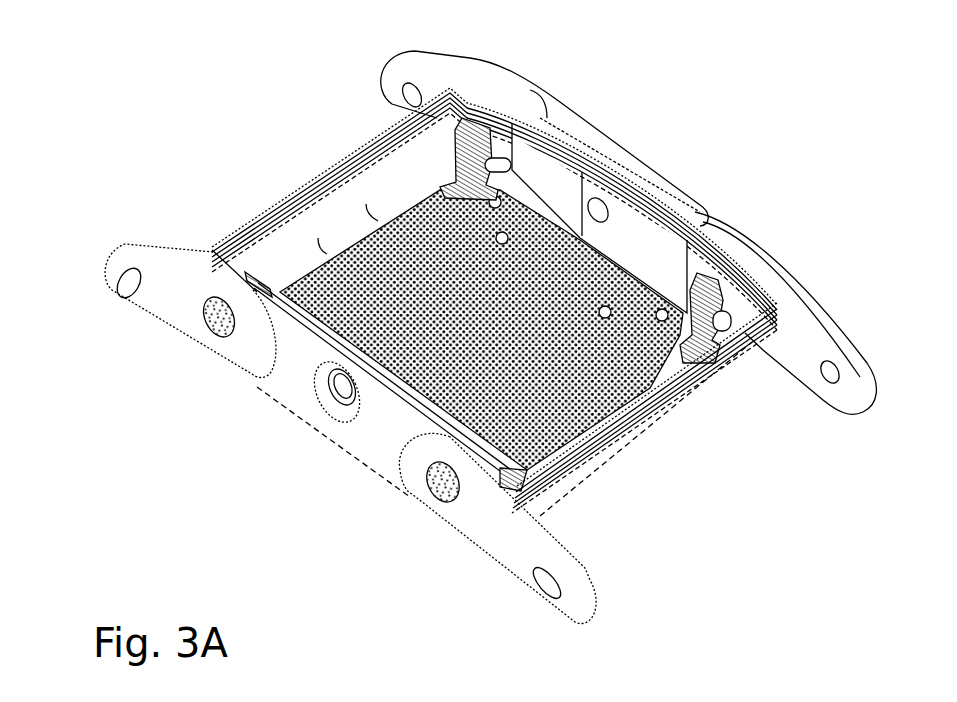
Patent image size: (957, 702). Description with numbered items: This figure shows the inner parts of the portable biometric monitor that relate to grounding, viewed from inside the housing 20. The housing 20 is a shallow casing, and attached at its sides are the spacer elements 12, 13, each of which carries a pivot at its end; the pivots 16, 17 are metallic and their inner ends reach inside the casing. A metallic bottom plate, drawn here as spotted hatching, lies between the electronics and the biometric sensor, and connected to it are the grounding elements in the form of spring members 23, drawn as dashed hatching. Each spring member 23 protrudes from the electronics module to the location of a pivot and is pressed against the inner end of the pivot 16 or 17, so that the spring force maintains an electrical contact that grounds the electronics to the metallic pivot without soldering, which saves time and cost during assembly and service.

The spacer element 12 is at (160, 357).
The spacer element 13 is at (480, 559).
The pivot 16 is at (182, 389).
The pivot 17 is at (395, 546).
The housing 20 is at (647, 428).
The spring member 23 is at (392, 126).